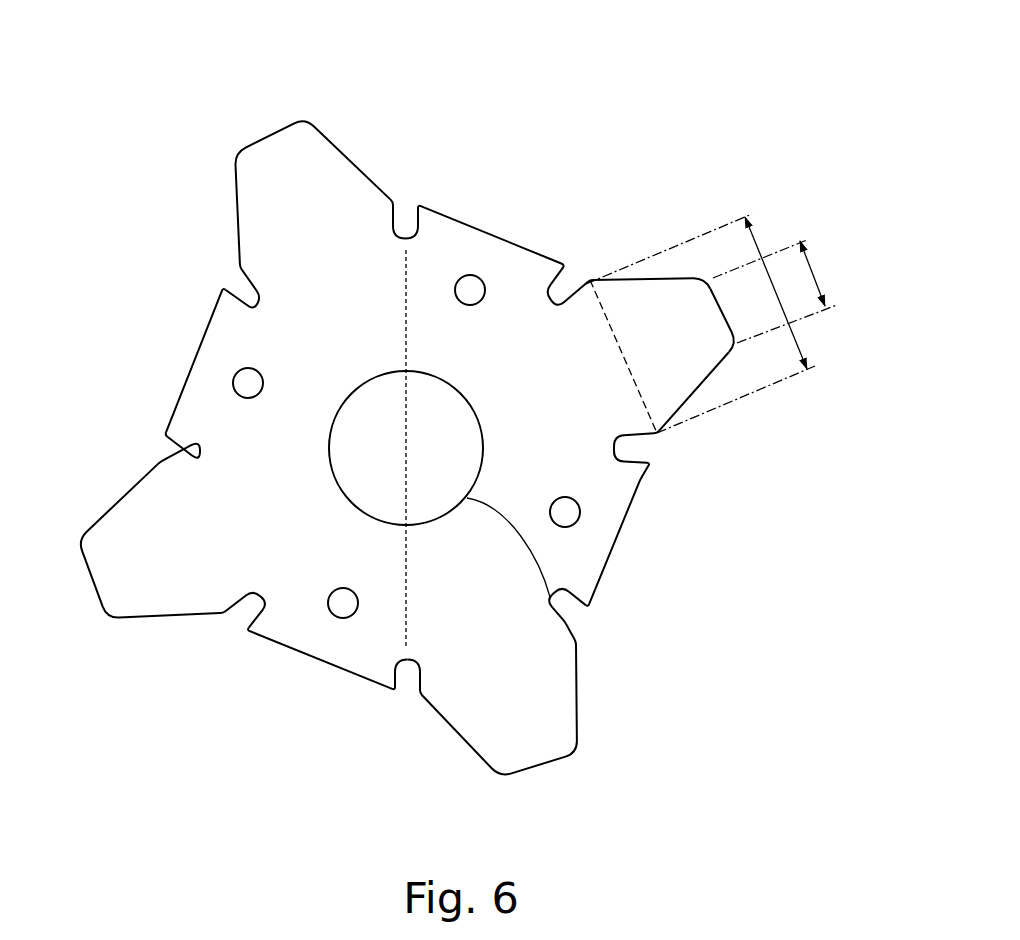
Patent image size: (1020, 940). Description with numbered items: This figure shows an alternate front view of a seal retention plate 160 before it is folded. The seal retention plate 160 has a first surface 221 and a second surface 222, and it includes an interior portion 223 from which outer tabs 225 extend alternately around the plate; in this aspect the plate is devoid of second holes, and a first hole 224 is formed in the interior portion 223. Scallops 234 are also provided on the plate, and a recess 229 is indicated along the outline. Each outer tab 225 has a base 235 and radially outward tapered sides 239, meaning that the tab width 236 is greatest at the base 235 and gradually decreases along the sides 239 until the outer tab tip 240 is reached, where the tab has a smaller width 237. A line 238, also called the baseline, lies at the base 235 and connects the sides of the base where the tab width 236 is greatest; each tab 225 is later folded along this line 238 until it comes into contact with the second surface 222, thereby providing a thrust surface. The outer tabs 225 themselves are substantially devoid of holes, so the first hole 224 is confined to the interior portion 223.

The seal retention plate 160 is at (166, 112).
The first surface 221 is at (240, 433).
The second surface 222 is at (115, 495).
The interior portion 223 is at (273, 527).
The first hole 224 is at (240, 373).
The outer tabs 225 is at (327, 183).
The recess 229 is at (563, 618).
The scallops 234 is at (248, 300).
The base 235 is at (610, 307).
The tab width 236 is at (753, 240).
The width 237 is at (813, 277).
The line 238 is at (635, 388).
The radially outward tapered sides 239 is at (677, 277).
The outer tab tip 240 is at (720, 298).